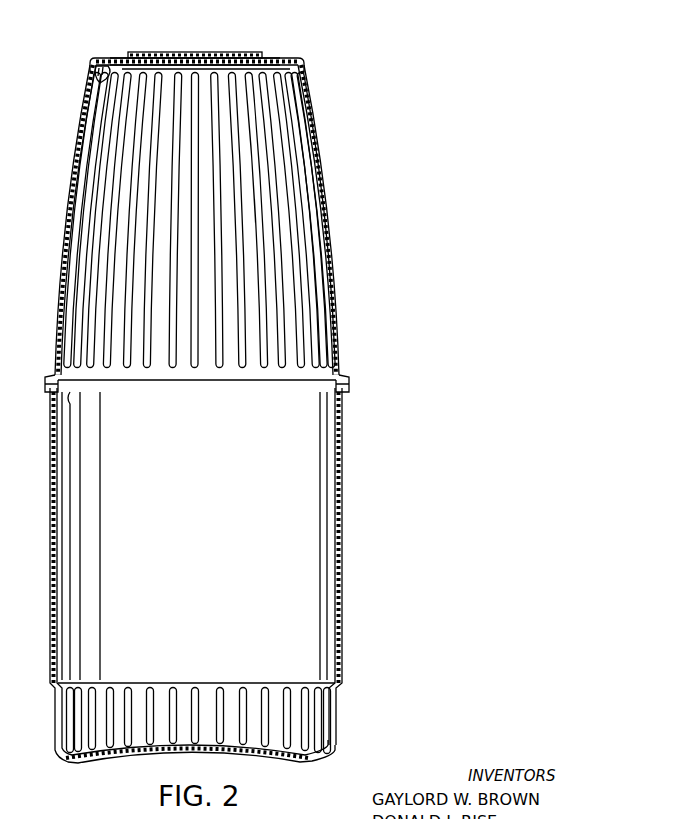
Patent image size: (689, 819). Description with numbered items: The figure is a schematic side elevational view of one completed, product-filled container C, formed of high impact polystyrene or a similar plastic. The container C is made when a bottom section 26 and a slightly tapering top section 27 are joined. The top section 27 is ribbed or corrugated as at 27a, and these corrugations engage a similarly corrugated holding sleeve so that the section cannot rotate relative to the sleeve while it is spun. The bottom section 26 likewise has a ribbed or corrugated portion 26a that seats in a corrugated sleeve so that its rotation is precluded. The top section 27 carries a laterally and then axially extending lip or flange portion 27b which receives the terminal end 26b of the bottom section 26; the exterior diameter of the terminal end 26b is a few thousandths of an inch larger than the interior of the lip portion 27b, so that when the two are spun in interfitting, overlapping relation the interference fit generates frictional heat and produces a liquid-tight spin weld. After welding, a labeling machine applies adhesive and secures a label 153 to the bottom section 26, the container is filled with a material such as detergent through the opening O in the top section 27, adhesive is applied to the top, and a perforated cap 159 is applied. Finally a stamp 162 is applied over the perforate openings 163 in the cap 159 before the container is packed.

The perforated cap 159 is at (279, 58).
The stamp 162 is at (253, 57).
The perforate openings 163 is at (232, 53).
The opening O is at (93, 80).
The top section 27 is at (348, 316).
The ribbed or corrugated portion 27a is at (312, 227).
The lip or flange portion 27b is at (345, 383).
The bottom section 26 is at (350, 575).
The ribbed or corrugated portion 26a is at (337, 698).
The terminal end 26b is at (332, 390).
The container C is at (355, 447).
The label 153 is at (343, 500).